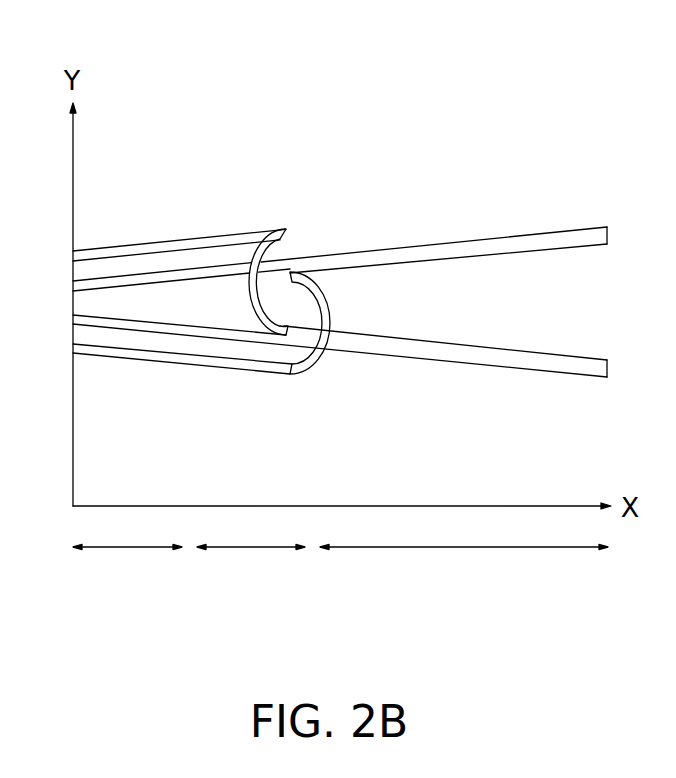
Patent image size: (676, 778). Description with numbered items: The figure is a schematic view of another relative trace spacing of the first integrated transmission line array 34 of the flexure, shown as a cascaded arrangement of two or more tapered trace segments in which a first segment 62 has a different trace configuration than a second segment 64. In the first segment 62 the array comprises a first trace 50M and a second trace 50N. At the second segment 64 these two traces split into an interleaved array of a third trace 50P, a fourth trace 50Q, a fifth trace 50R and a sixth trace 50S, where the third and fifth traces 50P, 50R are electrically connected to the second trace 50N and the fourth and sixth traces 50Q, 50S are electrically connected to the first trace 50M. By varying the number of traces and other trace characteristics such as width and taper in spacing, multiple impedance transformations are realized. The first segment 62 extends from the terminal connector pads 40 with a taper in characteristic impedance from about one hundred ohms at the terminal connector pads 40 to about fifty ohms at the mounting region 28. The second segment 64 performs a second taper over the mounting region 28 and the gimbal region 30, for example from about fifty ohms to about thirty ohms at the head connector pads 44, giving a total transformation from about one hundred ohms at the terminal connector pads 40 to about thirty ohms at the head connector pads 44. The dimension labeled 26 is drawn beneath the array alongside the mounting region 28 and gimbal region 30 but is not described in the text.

The third section 26 is at (442, 568).
The mounting region 28 is at (250, 568).
The gimbal region 30 is at (128, 568).
The first integrated transmission line array 34 is at (371, 339).
The terminal connector pads 40 is at (612, 563).
The head connector pads 44 is at (73, 562).
The first trace 50M is at (445, 406).
The second trace 50N is at (590, 373).
The third trace 50P is at (167, 243).
The fourth trace 50Q is at (229, 270).
The fifth trace 50R is at (237, 336).
The sixth trace 50S is at (160, 360).
The first segment 62 is at (465, 372).
The second segment 64 is at (340, 266).